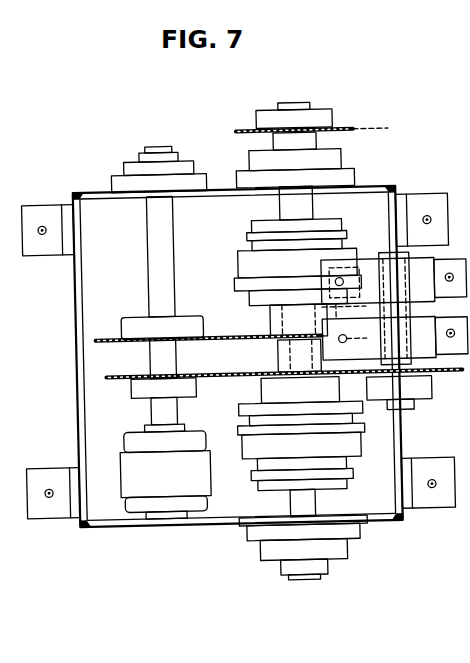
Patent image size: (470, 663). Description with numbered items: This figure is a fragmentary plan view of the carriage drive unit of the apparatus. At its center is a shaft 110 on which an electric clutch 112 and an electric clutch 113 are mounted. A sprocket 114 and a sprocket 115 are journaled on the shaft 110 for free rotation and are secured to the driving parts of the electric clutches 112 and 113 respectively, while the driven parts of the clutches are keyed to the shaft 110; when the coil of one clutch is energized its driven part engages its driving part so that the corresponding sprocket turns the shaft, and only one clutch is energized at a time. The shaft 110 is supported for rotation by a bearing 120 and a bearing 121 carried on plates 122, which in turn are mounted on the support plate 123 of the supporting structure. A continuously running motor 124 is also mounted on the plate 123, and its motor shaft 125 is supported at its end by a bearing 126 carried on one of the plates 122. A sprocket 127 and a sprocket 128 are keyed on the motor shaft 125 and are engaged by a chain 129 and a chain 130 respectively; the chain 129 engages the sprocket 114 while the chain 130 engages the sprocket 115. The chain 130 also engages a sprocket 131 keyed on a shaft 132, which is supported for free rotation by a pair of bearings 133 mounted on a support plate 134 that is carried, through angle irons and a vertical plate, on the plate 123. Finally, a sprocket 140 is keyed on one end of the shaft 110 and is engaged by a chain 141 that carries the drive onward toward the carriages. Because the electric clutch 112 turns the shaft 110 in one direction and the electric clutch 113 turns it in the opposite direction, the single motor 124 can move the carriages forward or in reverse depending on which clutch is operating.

The shaft 110 is at (293, 103).
The electric clutch 112 is at (238, 263).
The electric clutch 113 is at (238, 413).
The sprocket 114 is at (247, 333).
The sprocket 115 is at (284, 362).
The bearing 120 is at (351, 176).
The bearing 121 is at (357, 533).
The plate 122 is at (79, 191).
The support plate 123 is at (238, 356).
The motor 124 is at (166, 472).
The motor shaft 125 is at (155, 147).
The bearing 126 is at (113, 186).
The sprocket 127 is at (113, 330).
The sprocket 128 is at (131, 386).
The chain 129 is at (232, 341).
The chain 130 is at (223, 377).
The sprocket 131 is at (455, 377).
The shaft 132 is at (408, 400).
The bearing 133 is at (377, 322).
The support plate 134 is at (442, 303).
The sprocket 140 is at (338, 128).
The chain 141 is at (376, 128).